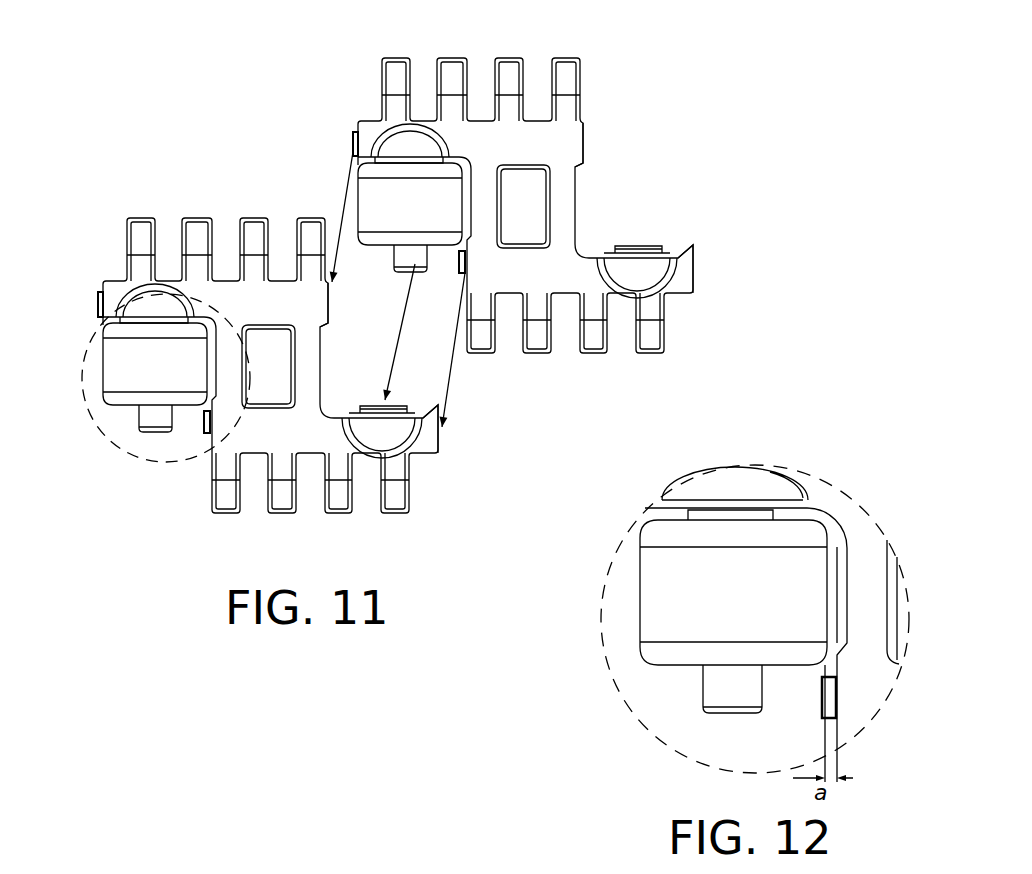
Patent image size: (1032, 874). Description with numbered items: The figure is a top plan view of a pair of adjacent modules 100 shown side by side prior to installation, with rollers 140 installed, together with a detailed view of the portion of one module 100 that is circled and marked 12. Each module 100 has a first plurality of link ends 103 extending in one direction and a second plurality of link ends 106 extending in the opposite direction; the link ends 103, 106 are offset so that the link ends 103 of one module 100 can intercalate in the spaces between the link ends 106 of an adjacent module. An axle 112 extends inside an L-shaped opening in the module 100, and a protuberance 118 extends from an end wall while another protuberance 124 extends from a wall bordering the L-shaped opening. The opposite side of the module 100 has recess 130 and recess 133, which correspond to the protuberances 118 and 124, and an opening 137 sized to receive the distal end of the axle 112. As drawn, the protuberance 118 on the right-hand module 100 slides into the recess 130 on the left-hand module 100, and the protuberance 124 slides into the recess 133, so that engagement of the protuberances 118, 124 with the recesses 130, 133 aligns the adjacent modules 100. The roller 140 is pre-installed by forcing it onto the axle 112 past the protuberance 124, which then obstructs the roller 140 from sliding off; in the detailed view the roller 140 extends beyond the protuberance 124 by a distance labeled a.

In FIG. 11, the detail region shown in FIG. 12 is at (127, 455).
In FIG. 11, the module 100 is at (282, 317).
In FIG. 12, the module 100 is at (848, 528).
In FIG. 11, the first plurality of link ends 103 is at (255, 237).
In FIG. 11, the second plurality of link ends 106 is at (282, 497).
In FIG. 11, the axle 112 is at (418, 268).
In FIG. 12, the axle 112 is at (716, 682).
In FIG. 11, the protuberance 118 is at (98, 303).
In FIG. 11, the protuberance 124 is at (207, 434).
In FIG. 12, the protuberance 124 is at (834, 698).
In FIG. 11, the recess 130 is at (375, 304).
In FIG. 11, the recess 133 is at (440, 452).
In FIG. 11, the opening 137 is at (368, 396).
In FIG. 11, the roller 140 is at (182, 377).
In FIG. 12, the roller 140 is at (770, 606).